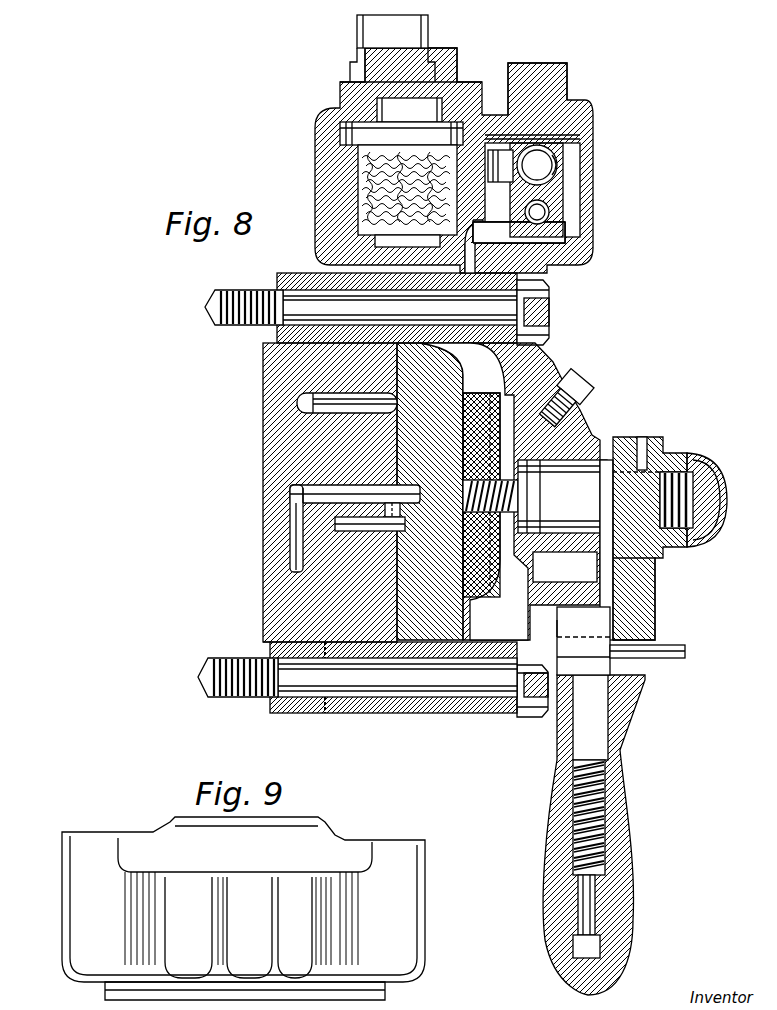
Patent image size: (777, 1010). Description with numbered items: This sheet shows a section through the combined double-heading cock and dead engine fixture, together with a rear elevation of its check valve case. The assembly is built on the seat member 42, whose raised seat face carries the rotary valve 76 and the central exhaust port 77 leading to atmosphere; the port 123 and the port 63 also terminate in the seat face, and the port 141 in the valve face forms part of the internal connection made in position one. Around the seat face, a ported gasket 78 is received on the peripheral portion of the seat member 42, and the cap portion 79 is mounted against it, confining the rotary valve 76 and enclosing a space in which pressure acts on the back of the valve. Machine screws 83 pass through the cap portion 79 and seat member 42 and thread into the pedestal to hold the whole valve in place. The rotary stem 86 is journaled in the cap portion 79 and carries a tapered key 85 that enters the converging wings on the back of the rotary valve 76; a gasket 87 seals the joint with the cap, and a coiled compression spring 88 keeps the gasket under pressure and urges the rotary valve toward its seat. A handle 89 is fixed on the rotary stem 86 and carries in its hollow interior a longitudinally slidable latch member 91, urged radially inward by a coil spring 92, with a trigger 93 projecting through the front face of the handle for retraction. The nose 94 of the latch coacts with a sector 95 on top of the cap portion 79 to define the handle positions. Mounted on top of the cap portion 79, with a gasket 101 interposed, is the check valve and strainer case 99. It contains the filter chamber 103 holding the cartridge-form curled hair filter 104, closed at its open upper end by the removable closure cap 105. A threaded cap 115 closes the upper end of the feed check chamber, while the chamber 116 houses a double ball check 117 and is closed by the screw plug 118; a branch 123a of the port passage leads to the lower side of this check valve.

In FIG. 8, the threaded cap 115 is at (357, 33).
In FIG. 8, the removable closure cap 105 is at (457, 63).
In FIG. 8, the screw plug 118 is at (567, 73).
In FIG. 8, the check valve and strainer case 99 is at (338, 172).
In FIG. 9, the check valve and strainer case 99 is at (62, 895).
In FIG. 8, the filter chamber 103 is at (401, 133).
In FIG. 8, the curled hair filter 104 is at (358, 218).
In FIG. 8, the chamber 116 is at (580, 168).
In FIG. 8, the double ball check 117 is at (585, 200).
In FIG. 8, the gasket 101 is at (550, 276).
In FIG. 8, the branch of the passage 123a is at (361, 307).
In FIG. 8, the machine screws 83 is at (549, 312).
In FIG. 8, the rotary valve 76 is at (464, 372).
In FIG. 8, the port 123 is at (300, 405).
In FIG. 8, the rotary stem 86 is at (582, 462).
In FIG. 8, the exhaust port 77 is at (300, 511).
In FIG. 8, the port 141 is at (396, 520).
In FIG. 8, the coiled compression spring 88 is at (522, 498).
In FIG. 8, the port 63 is at (345, 526).
In FIG. 8, the seat member 42 is at (263, 578).
In FIG. 8, the gasket 87 is at (565, 567).
In FIG. 8, the sector 95 is at (600, 597).
In FIG. 8, the tapered key 85 is at (470, 600).
In FIG. 8, the nose 94 is at (557, 628).
In FIG. 8, the trigger 93 is at (672, 652).
In FIG. 8, the latch member 91 is at (600, 665).
In FIG. 8, the gasket 78 is at (325, 712).
In FIG. 8, the cap portion 79 is at (412, 714).
In FIG. 8, the coil spring 92 is at (575, 812).
In FIG. 8, the handle 89 is at (633, 870).